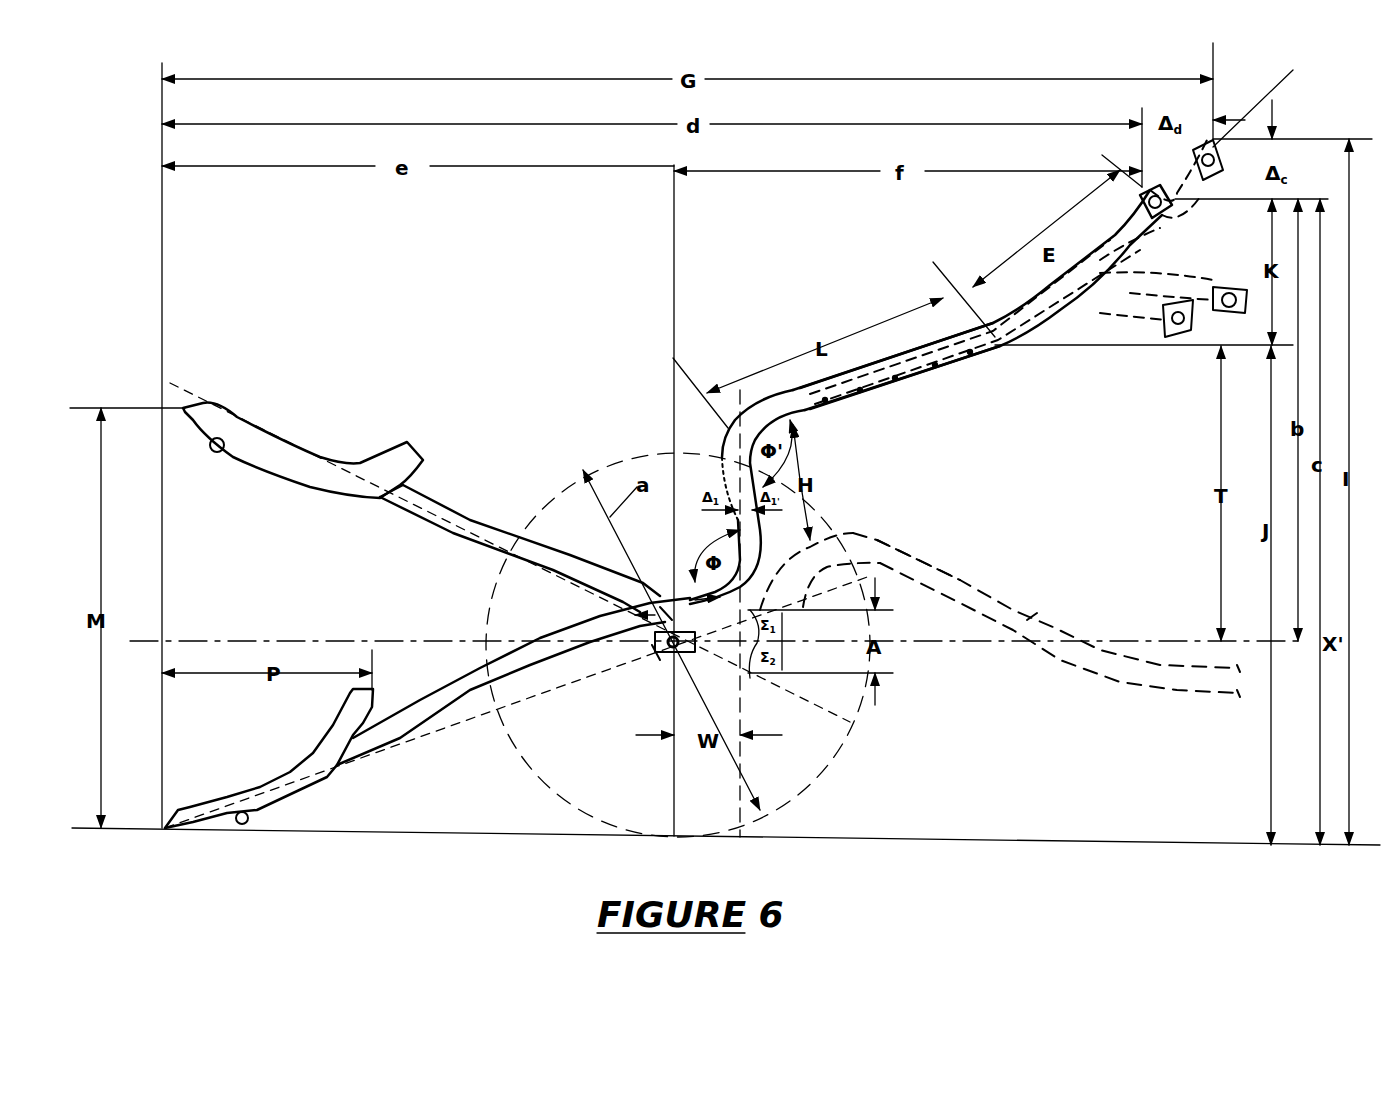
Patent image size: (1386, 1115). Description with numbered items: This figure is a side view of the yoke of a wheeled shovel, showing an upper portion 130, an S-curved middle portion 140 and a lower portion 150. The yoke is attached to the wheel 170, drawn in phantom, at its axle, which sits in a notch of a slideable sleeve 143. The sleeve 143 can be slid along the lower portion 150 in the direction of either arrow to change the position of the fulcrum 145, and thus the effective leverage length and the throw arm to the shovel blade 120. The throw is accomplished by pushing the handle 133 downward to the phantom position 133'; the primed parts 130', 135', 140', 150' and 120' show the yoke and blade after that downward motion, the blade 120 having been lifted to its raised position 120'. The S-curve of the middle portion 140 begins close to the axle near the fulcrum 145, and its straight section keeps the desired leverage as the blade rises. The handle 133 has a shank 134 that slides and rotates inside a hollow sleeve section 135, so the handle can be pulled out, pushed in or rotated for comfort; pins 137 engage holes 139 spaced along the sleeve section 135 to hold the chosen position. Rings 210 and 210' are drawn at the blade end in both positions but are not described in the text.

The shovel blade 120 is at (269, 758).
The shovel blade in raised position 120' is at (303, 441).
The skid attachment ring 210 is at (270, 822).
The skid attachment ring in rotated position 210' is at (242, 469).
The lower portion of the yoke 150 is at (513, 681).
The lower portion of the yoke in raised position 150' is at (520, 518).
The middle portion of the yoke 140 is at (739, 497).
The middle portion of the yoke in raised position 140' is at (820, 571).
The upper portion of the yoke 130 is at (977, 300).
The upper portion of the yoke in lowered position 130' is at (1045, 613).
The handle 133 is at (1104, 212).
The handle in lowered position 133' is at (1133, 637).
The shank 134 is at (937, 372).
The hollow sleeve section 135 is at (855, 355).
The hollow sleeve section in lowered position 135' is at (934, 544).
The pins 137 is at (827, 413).
The holes 139 is at (870, 393).
The slideable sleeve 143 is at (677, 593).
The fulcrum 145 is at (666, 654).
The wheel 170 is at (557, 487).